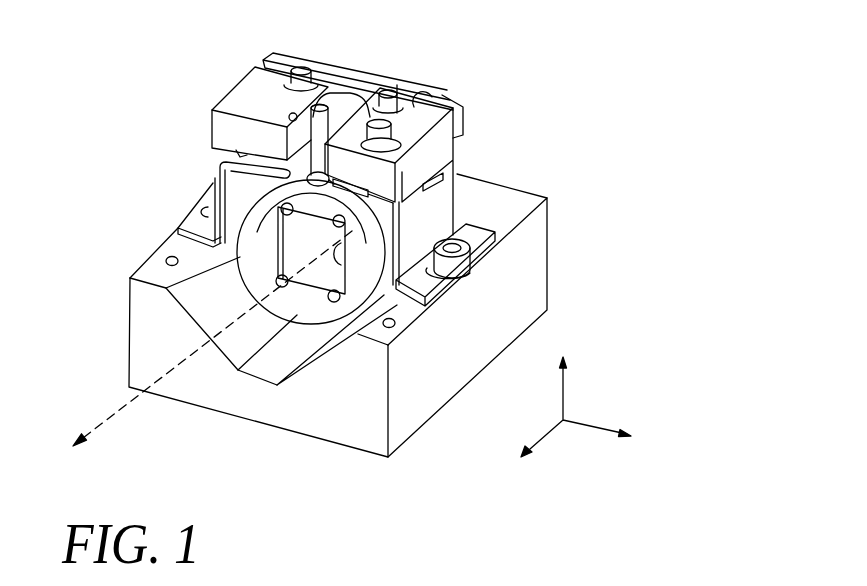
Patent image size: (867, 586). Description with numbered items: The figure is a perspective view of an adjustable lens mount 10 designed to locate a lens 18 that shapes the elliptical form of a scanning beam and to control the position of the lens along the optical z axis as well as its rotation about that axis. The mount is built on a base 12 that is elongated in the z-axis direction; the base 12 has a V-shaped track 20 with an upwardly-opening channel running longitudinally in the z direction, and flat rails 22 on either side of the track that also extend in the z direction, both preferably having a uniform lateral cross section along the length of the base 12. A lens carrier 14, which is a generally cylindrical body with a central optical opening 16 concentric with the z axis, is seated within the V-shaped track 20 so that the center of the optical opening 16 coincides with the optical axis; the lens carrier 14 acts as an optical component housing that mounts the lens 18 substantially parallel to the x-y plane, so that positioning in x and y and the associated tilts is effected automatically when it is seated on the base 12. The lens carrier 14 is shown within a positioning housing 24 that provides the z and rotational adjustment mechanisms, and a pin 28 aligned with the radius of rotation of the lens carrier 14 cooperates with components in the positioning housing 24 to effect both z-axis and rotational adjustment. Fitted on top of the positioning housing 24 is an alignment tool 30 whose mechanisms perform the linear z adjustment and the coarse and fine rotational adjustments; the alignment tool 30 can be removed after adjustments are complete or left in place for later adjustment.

The adjustable lens mount 10 is at (636, 90).
The base 12 is at (547, 253).
The lens carrier 14 is at (247, 192).
The central optical opening 16 is at (383, 240).
The lens 18 is at (240, 257).
The V-shaped track 20 is at (285, 363).
The flat rails 22 is at (158, 261).
The positioning housing 24 is at (273, 53).
The pin 28 is at (347, 88).
The alignment tool 30 is at (465, 140).